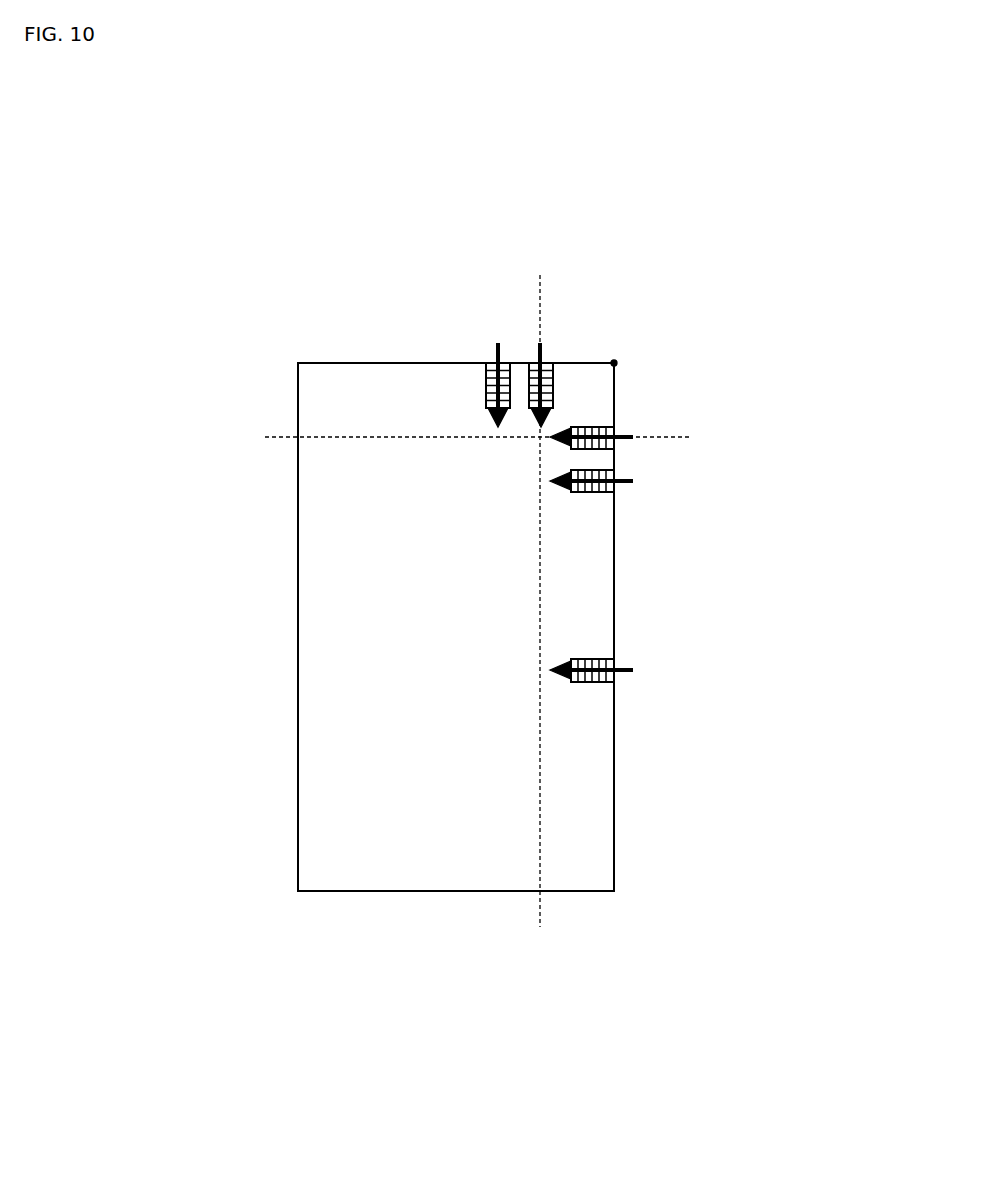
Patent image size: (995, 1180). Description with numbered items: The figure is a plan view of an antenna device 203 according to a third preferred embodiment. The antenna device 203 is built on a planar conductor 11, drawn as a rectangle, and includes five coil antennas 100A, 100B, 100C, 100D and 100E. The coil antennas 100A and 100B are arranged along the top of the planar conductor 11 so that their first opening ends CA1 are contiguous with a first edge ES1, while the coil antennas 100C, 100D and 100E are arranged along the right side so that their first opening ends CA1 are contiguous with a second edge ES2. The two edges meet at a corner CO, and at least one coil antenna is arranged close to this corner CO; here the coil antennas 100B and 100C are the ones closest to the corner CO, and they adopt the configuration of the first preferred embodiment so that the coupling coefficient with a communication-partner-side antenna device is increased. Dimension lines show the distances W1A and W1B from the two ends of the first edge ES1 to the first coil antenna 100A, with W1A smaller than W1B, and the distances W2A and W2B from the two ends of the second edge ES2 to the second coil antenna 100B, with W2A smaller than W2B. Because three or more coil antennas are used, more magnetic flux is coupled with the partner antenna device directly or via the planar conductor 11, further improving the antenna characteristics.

The antenna device 203 is at (326, 240).
The planar conductor 11 is at (316, 640).
The first coil antenna 100A is at (486, 390).
The second coil antenna 100B is at (529, 390).
The coil antenna 100C is at (582, 427).
The coil antenna 100D is at (587, 492).
The coil antenna 100E is at (587, 659).
The first opening end CA1 is at (490, 360).
The corner CO is at (618, 359).
The first edge ES1 is at (290, 363).
The second edge ES2 is at (614, 901).
The distance W1A is at (614, 363).
The distance W1B is at (540, 343).
The distance W2A is at (614, 363).
The distance W2B is at (635, 437).